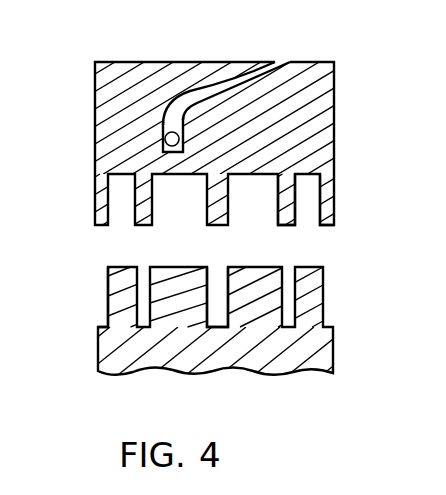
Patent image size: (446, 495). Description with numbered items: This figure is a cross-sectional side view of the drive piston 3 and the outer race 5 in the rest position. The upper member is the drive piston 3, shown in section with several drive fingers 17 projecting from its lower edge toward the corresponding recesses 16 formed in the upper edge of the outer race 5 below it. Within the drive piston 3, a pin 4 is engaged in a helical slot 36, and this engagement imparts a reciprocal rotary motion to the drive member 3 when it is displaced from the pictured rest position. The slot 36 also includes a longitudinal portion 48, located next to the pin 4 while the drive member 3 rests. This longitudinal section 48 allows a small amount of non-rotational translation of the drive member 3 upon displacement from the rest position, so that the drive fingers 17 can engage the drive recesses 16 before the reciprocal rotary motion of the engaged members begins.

The drive piston 3 is at (300, 128).
The pin 4 is at (172, 138).
The outer race 5 is at (307, 355).
The recesses 16 is at (217, 310).
The drive fingers 17 is at (285, 212).
The helical slot 36 is at (227, 80).
The longitudinal portion 48 is at (171, 130).